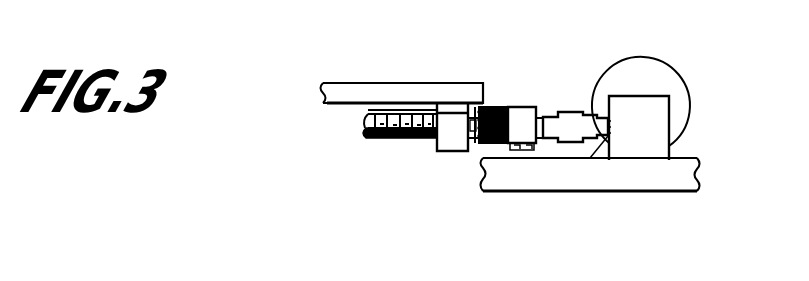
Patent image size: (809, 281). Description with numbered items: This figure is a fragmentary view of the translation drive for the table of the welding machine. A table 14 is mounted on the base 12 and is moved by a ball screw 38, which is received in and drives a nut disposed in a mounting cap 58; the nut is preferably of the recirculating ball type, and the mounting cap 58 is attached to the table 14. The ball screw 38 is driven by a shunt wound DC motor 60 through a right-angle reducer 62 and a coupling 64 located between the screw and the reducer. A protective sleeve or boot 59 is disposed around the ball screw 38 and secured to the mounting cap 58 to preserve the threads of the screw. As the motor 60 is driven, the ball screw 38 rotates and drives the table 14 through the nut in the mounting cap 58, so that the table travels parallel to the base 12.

The base 12 is at (680, 181).
The table 14 is at (470, 91).
The ball screw 38 is at (358, 125).
The mounting cap 58 is at (448, 141).
The protective sleeve or boot 59 is at (367, 138).
The shunt wound DC motor 60 is at (650, 70).
The right-angle reducer 62 is at (662, 112).
The coupling 64 is at (567, 112).